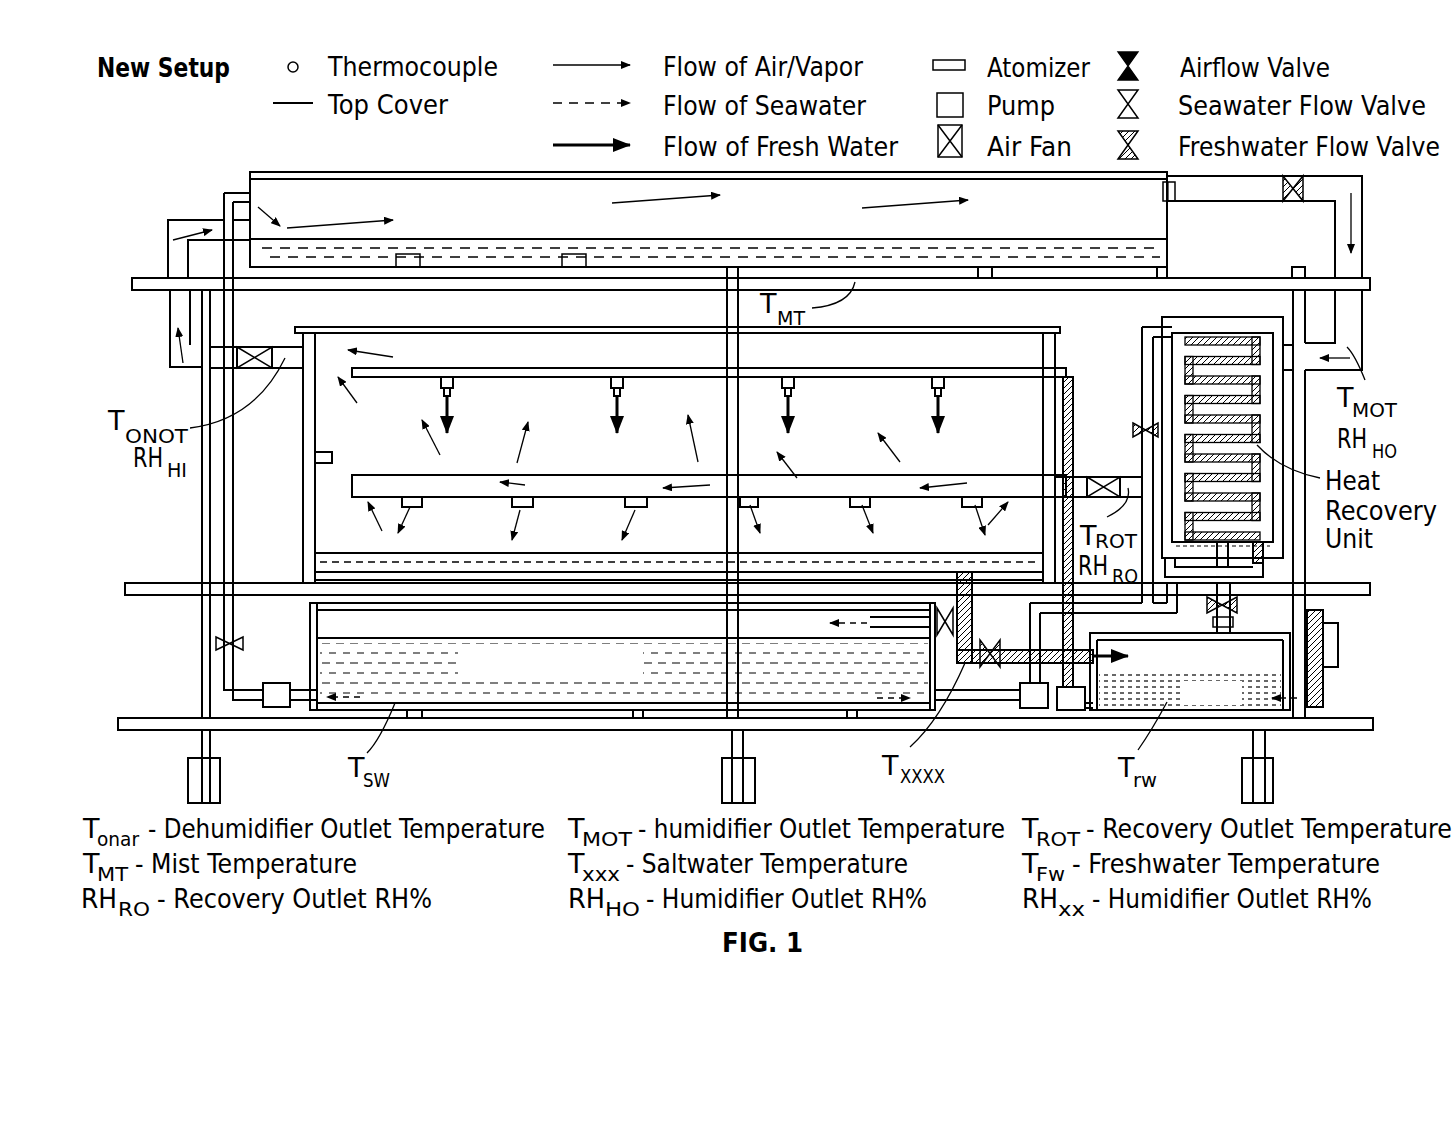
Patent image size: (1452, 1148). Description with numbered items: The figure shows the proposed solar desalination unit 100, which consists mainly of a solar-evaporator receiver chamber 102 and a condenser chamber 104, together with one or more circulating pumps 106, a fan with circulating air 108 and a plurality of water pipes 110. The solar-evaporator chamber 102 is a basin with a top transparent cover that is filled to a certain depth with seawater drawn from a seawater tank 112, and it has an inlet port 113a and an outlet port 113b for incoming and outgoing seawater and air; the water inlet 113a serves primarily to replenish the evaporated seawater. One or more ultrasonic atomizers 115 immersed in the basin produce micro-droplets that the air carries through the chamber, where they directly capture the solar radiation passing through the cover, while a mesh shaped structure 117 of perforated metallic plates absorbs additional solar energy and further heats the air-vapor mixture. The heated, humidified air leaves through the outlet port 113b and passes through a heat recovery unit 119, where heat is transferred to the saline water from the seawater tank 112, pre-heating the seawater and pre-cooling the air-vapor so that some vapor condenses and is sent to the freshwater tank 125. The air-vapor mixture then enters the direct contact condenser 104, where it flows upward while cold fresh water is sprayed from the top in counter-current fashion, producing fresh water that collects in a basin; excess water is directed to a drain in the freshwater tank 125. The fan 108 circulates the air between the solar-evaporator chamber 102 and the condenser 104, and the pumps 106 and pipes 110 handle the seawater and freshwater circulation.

The desalination system 100 is at (203, 153).
The solar-evaporator receiver chamber 102 is at (453, 211).
The condenser chamber 104 is at (872, 350).
The circulating pump 106 is at (277, 708).
The fan with circulating air 108 is at (250, 345).
The water pipes 110 is at (1020, 380).
The seawater tank 112 is at (527, 710).
The inlet port 113a is at (252, 199).
The outlet port 113b is at (1160, 192).
The ultrasonic atomizer 115 is at (407, 282).
The mesh shaped structure 117 is at (1195, 357).
The heat recovery unit 119 is at (1180, 390).
The freshwater tank 125 is at (1172, 697).